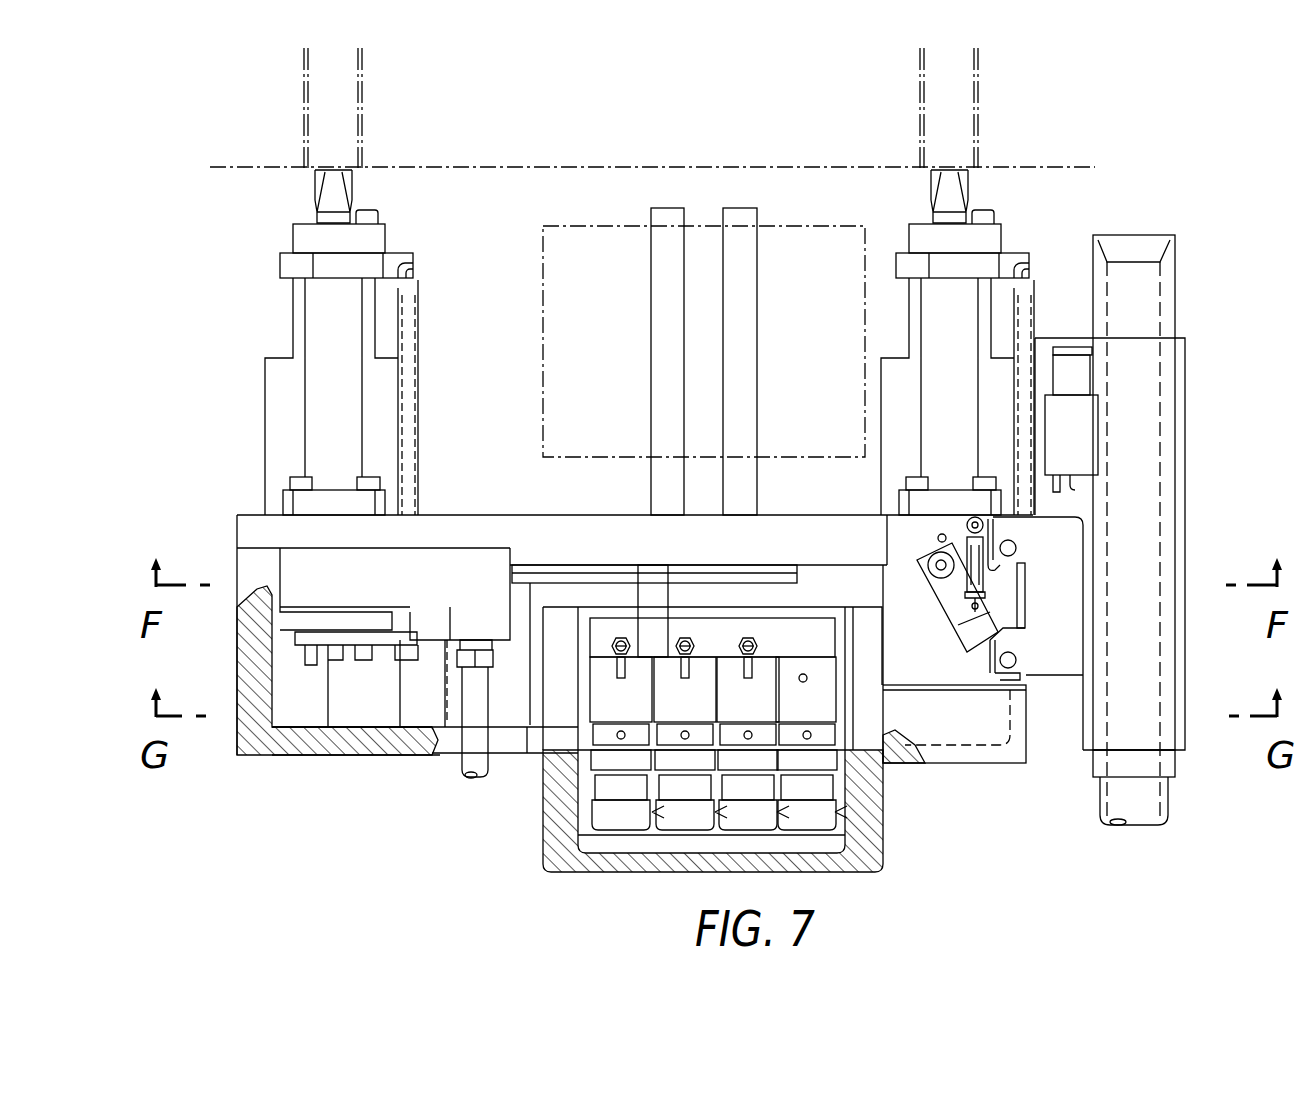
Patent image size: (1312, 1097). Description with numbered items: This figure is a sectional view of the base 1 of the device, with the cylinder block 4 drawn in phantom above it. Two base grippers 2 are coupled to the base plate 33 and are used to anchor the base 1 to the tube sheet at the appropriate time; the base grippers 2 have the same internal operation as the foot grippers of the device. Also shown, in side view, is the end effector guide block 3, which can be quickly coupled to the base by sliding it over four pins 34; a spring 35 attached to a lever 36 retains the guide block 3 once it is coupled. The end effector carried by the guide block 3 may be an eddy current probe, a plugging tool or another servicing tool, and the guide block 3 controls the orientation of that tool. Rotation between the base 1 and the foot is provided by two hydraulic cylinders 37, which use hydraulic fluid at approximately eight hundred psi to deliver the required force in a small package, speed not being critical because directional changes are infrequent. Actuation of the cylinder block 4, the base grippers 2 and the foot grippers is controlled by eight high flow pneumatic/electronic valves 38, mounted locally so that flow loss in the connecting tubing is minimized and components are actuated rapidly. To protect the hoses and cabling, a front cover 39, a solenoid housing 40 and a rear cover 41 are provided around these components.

The base 1 is at (602, 886).
The base grippers 2 is at (405, 227).
The end effector guide block 3 is at (1185, 362).
The cylinder block 4 is at (543, 296).
The base plate 33 is at (237, 515).
The pins 34 is at (1018, 553).
The spring 35 is at (990, 537).
The lever 36 is at (972, 646).
The hydraulic cylinders 37 is at (415, 572).
The pneumatic/electronic valves 38 is at (578, 787).
The front cover 39 is at (952, 765).
The solenoid housing 40 is at (882, 820).
The rear cover 41 is at (348, 757).